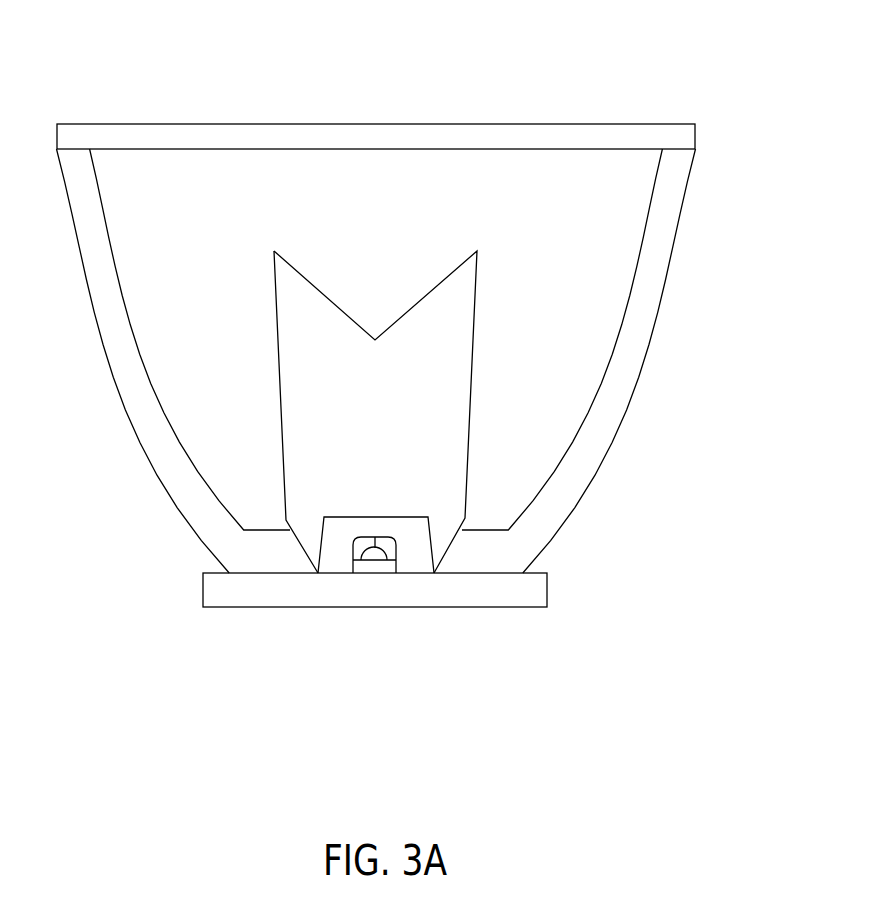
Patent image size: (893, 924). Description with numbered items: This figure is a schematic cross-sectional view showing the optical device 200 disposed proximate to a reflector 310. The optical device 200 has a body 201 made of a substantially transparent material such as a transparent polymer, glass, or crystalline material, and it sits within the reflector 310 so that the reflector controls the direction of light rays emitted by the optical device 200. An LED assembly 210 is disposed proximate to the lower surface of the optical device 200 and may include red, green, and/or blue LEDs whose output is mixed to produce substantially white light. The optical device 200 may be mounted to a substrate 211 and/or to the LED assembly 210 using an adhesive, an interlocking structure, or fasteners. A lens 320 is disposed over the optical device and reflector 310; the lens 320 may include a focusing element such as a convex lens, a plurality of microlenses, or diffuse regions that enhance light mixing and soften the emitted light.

The lens 320 is at (483, 124).
The reflector 310 is at (588, 492).
The body 201 is at (247, 218).
The optical device 200 is at (470, 398).
The LED assembly 210 is at (375, 574).
The substrate 211 is at (488, 574).